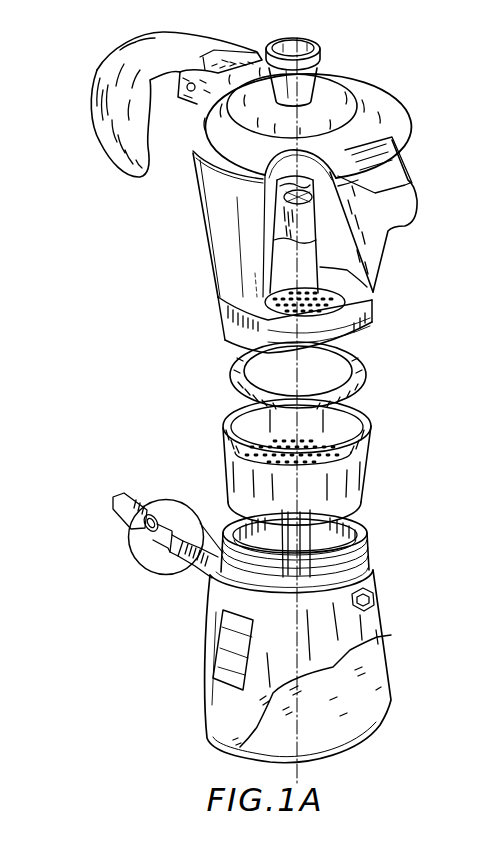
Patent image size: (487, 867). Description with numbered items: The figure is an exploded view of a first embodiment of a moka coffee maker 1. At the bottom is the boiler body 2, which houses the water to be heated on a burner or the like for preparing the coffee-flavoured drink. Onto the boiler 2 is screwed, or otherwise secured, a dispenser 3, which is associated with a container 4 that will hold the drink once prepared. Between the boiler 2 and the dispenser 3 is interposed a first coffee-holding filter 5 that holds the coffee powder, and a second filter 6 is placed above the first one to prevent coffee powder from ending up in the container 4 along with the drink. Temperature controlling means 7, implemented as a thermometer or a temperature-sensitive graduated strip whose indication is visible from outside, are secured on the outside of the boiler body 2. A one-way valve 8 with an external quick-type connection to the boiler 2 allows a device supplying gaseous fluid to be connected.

The moka coffee maker 1 is at (92, 483).
The boiler body 2 is at (391, 636).
The dispenser 3 is at (375, 291).
The container 4 is at (228, 237).
The first coffee-holding filter 5 is at (224, 460).
The second filter 6 is at (366, 352).
The temperature controlling means 7 is at (208, 650).
The one-way valve 8 is at (200, 577).